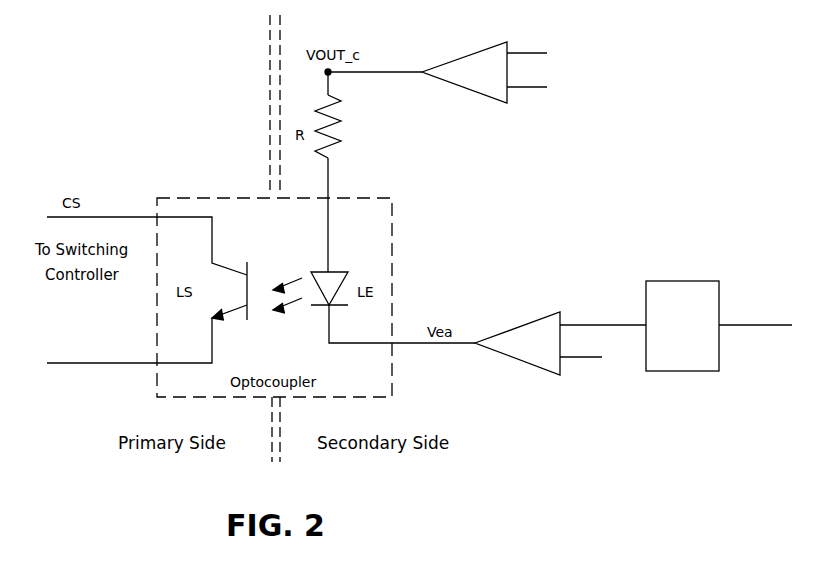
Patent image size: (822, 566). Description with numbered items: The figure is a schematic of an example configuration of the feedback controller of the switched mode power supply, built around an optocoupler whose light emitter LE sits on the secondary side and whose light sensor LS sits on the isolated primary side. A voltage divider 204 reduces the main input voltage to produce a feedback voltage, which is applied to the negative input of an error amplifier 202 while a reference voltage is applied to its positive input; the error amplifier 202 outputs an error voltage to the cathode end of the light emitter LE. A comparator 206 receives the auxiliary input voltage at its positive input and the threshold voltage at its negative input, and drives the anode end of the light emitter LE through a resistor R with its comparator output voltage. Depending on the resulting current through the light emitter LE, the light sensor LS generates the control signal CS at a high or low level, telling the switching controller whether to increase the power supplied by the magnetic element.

The error amplifier 202 is at (525, 324).
The voltage divider 204 is at (719, 326).
The comparator circuit 206 is at (469, 55).